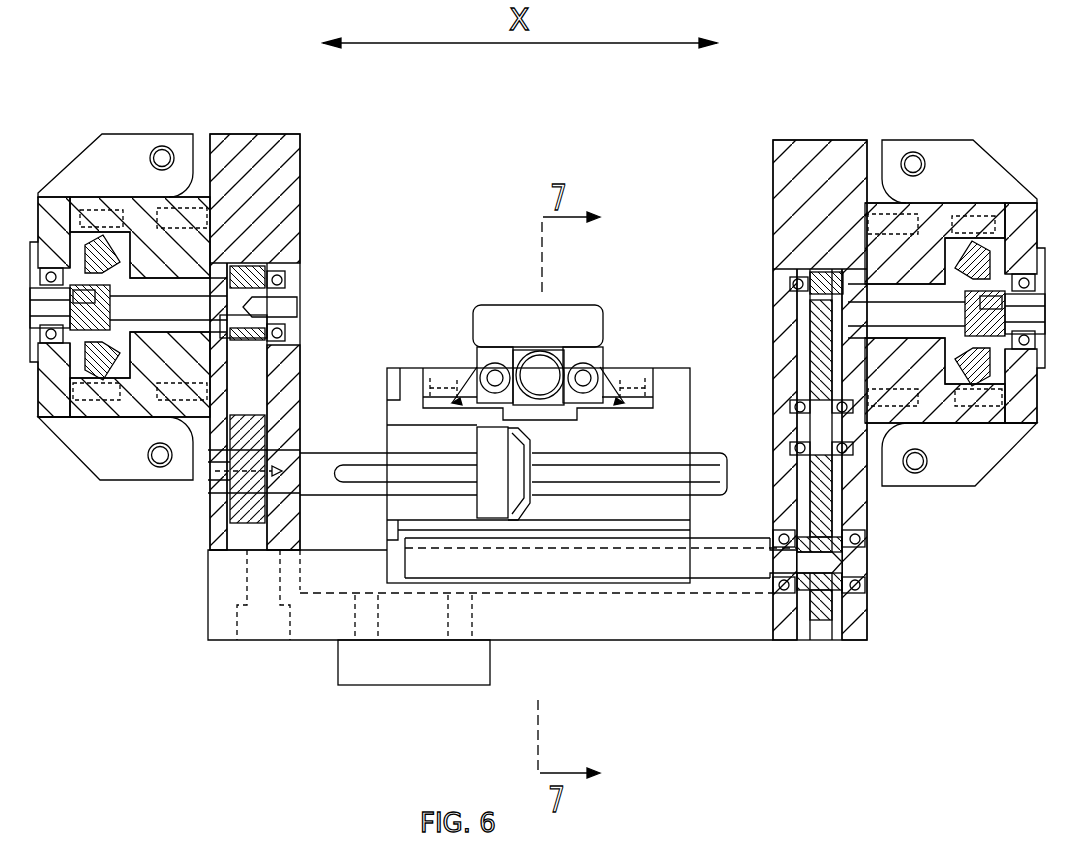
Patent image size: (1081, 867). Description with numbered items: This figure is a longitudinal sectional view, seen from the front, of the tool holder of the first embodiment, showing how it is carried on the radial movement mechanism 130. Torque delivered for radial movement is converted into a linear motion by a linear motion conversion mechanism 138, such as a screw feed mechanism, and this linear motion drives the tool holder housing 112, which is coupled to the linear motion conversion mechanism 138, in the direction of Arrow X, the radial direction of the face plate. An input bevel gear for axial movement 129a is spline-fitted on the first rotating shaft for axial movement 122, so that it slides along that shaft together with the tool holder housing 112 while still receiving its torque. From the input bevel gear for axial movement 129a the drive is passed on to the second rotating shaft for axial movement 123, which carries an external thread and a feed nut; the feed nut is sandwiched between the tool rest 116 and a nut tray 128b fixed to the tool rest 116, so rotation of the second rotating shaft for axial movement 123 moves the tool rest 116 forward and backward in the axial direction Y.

The tool holder housing 112 is at (670, 417).
The tool rest 116 is at (507, 327).
The first rotating shaft for axial movement 122 is at (328, 455).
The second rotating shaft for axial movement 123 is at (543, 367).
The nut tray 128b is at (583, 355).
The input bevel gear for axial movement 129a is at (490, 457).
The radial movement mechanism 130 is at (562, 614).
The linear motion conversion mechanism 138 is at (633, 593).